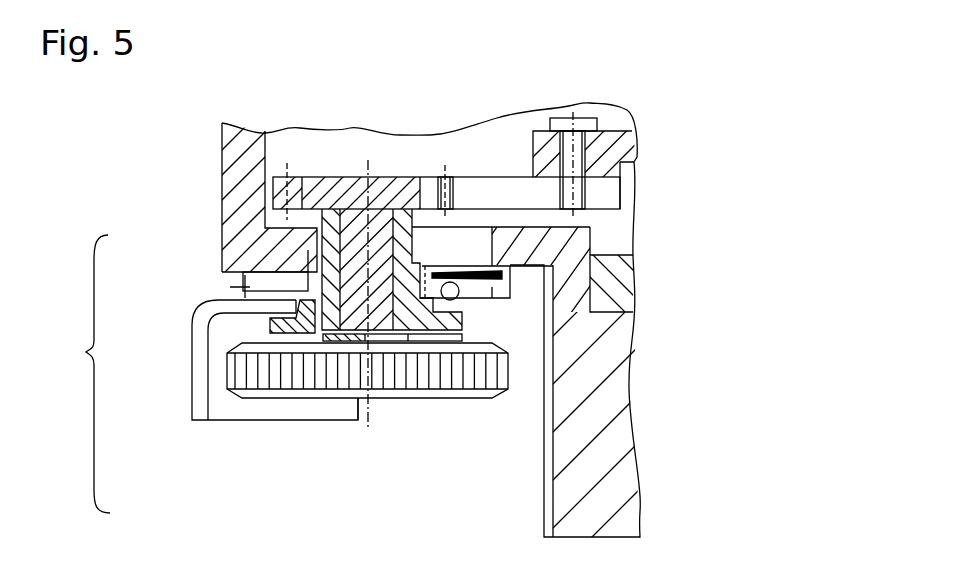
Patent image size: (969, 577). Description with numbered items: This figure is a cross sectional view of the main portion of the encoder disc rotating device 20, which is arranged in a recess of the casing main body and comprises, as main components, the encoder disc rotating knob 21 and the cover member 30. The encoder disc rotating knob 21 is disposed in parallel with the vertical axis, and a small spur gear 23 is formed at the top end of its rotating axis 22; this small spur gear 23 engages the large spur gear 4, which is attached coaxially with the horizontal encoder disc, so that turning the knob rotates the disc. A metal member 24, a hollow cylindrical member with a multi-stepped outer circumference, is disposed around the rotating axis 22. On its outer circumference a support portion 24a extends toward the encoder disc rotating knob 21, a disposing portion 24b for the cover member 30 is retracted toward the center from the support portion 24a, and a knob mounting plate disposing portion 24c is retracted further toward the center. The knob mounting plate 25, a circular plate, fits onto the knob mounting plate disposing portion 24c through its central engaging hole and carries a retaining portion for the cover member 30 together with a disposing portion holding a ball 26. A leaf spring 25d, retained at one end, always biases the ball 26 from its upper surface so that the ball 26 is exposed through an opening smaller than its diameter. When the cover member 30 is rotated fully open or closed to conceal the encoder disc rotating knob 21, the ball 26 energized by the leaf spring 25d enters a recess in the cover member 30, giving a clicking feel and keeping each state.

The large spur gear 4 is at (468, 177).
The encoder disc rotating device 20 is at (75, 374).
The encoder disc rotating knob 21 is at (315, 383).
The rotating axis 22 is at (243, 271).
The small spur gear 23 is at (332, 182).
The metal member 24 is at (305, 339).
The support portion 24a is at (323, 337).
The disposing portion for the cover member 24b is at (270, 326).
The knob mounting plate disposing portion 24c is at (323, 341).
The knob mounting plate 25 is at (237, 287).
The leaf spring 25d is at (465, 280).
The ball 26 is at (458, 298).
The cover member 30 is at (202, 400).